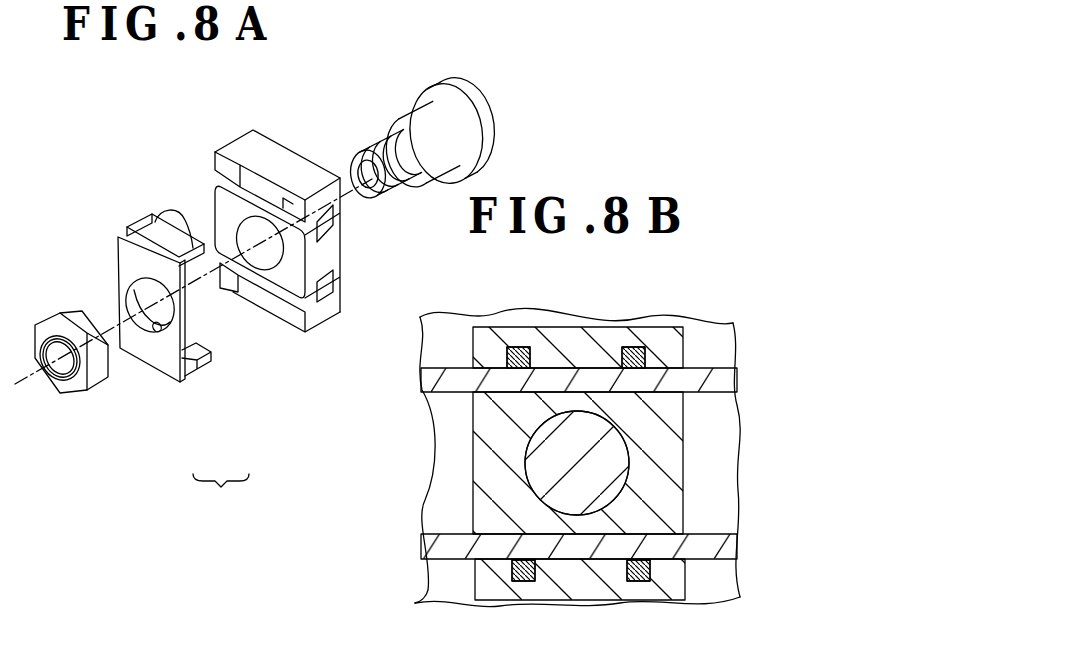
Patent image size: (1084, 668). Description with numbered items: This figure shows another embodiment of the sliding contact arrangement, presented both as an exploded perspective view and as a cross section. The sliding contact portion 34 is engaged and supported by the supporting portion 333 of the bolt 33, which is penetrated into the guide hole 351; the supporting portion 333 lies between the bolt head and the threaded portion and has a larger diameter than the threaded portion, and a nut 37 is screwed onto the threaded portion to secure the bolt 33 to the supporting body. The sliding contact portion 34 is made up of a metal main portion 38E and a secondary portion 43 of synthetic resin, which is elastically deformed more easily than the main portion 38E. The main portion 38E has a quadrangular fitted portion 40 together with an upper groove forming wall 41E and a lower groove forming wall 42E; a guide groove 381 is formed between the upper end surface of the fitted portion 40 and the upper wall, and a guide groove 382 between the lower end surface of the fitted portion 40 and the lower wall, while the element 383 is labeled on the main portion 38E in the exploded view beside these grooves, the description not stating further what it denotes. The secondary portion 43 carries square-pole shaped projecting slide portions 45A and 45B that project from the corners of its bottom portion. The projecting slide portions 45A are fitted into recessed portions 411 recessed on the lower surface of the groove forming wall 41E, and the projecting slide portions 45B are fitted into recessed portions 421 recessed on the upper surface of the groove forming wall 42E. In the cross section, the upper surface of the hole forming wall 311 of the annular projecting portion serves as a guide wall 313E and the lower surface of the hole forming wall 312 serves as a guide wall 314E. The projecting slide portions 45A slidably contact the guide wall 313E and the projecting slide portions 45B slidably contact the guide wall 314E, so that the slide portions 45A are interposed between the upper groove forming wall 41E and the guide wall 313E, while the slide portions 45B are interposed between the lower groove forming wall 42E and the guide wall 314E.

In FIG. 8A, the bolt 33 is at (478, 114).
In FIG. 8B, the supporting portion 333 is at (718, 442).
In FIG. 8A, the sliding contact portion 34 is at (221, 496).
In FIG. 8A, the nut 37 is at (50, 322).
In FIG. 8A, the main portion 38E is at (282, 291).
In FIG. 8B, the main portion 38E is at (645, 463).
In FIG. 8A, the guide groove 381 is at (342, 230).
In FIG. 8A, the guide groove 382 is at (380, 275).
In FIG. 8A, the through hole of holder member 383 is at (267, 250).
In FIG. 8A, the fitted portion 40 is at (220, 207).
In FIG. 8B, the fitted portion 40 is at (497, 425).
In FIG. 8A, the groove forming wall 41E is at (244, 175).
In FIG. 8B, the groove forming wall 41E is at (578, 320).
In FIG. 8A, the recessed portions 411 is at (286, 178).
In FIG. 8B, the recessed portions 411 is at (516, 348).
In FIG. 8A, the groove forming wall 42E is at (291, 316).
In FIG. 8B, the groove forming wall 42E is at (585, 606).
In FIG. 8A, the recessed portions 421 is at (236, 300).
In FIG. 8B, the recessed portions 421 is at (530, 582).
In FIG. 8A, the secondary portion 43 is at (145, 323).
In FIG. 8A, the projecting slide portions 45A is at (140, 218).
In FIG. 8B, the projecting slide portions 45A is at (468, 358).
In FIG. 8A, the projecting slide portions 45B is at (203, 368).
In FIG. 8B, the projecting slide portions 45B is at (700, 562).
In FIG. 8B, the hole forming wall 311 is at (564, 388).
In FIG. 8B, the hole forming wall 312 is at (572, 560).
In FIG. 8B, the guide wall 313E is at (420, 370).
In FIG. 8B, the guide wall 314E is at (432, 560).
In FIG. 8B, the guide hole 351 is at (442, 500).